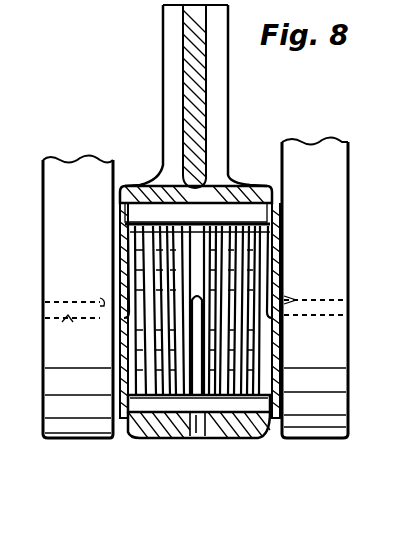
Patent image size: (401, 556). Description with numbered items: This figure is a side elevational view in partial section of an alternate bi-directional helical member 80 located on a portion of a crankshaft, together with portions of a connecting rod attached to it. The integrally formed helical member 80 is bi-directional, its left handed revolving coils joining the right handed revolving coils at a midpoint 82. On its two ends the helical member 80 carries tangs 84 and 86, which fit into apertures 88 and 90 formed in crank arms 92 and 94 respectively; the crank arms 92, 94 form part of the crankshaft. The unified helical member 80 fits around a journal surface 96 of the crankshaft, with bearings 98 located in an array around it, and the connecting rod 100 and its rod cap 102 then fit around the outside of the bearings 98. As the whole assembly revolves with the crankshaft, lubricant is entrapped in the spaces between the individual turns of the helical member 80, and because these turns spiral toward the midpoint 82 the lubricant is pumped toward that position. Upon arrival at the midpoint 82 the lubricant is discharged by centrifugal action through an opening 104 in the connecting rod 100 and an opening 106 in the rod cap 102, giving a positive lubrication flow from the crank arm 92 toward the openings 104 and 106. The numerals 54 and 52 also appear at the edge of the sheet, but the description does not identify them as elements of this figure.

The connecting rod 100 is at (222, 88).
The opening 104 is at (198, 203).
The bearings 98 is at (237, 204).
The journal surface 96 is at (277, 330).
The midpoint 82 is at (198, 247).
The helical member 80 is at (258, 258).
The rod cap 102 is at (262, 430).
The opening 106 is at (203, 432).
The crank arm 92 is at (80, 433).
The crank arm 94 is at (325, 430).
The tang 84 is at (99, 298).
The aperture 88 is at (67, 320).
The tang 86 is at (307, 297).
The aperture 90 is at (348, 314).
The adjacent member 54 is at (388, 464).
The adjacent member 52 is at (389, 527).